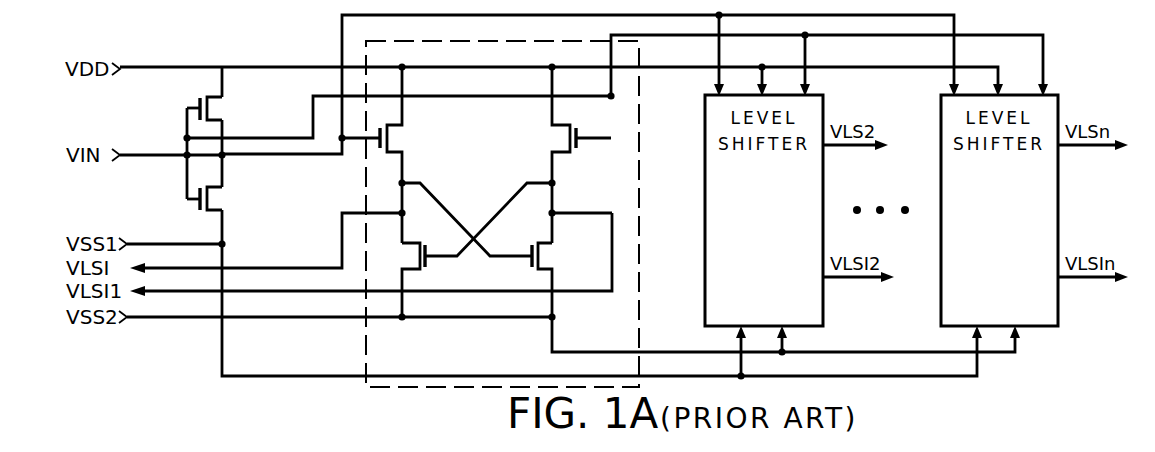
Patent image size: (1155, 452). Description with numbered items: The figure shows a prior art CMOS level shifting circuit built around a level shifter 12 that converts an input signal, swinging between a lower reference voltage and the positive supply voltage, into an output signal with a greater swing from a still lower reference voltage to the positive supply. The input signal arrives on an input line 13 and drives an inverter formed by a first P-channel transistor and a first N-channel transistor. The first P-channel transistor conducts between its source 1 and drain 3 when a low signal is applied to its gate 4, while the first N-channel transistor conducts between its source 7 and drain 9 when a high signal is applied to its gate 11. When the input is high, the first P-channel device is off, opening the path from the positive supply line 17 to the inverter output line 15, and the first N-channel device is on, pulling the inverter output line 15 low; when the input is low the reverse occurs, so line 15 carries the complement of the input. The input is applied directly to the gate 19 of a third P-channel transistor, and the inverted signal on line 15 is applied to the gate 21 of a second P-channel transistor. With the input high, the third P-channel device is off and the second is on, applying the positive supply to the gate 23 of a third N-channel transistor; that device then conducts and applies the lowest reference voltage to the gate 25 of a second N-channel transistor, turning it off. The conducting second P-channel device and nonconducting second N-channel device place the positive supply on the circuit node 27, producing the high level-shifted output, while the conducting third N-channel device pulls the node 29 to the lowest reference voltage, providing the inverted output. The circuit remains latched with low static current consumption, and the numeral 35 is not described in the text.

The source 1 is at (225, 82).
The drain 3 is at (225, 128).
The gate 4 is at (198, 102).
The source 7 is at (225, 170).
The drain 9 is at (220, 225).
The gate 11 is at (198, 201).
The level shifter 12 is at (411, 378).
The input line 13 is at (140, 152).
The inverter output line 15 is at (302, 158).
The VDD line 17 is at (250, 67).
The gate 19 is at (580, 148).
The gate 21 is at (375, 148).
The gate 23 is at (532, 251).
The gate 25 is at (428, 262).
The circuit node 27 is at (404, 213).
The node 29 is at (557, 212).
The level shifter circuit 35 is at (930, 450).